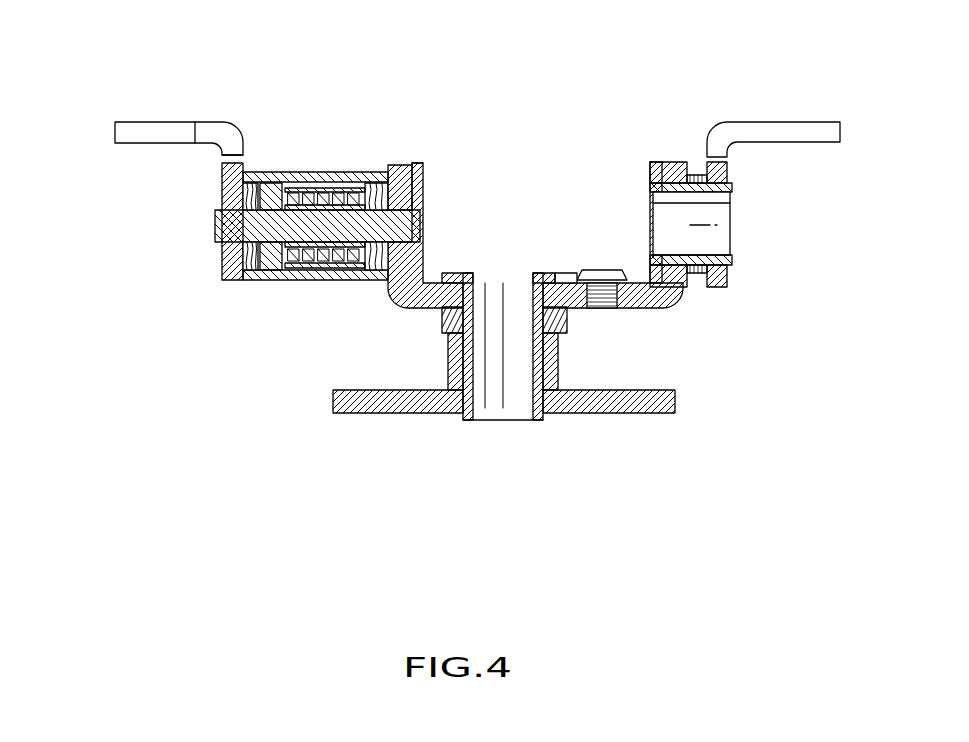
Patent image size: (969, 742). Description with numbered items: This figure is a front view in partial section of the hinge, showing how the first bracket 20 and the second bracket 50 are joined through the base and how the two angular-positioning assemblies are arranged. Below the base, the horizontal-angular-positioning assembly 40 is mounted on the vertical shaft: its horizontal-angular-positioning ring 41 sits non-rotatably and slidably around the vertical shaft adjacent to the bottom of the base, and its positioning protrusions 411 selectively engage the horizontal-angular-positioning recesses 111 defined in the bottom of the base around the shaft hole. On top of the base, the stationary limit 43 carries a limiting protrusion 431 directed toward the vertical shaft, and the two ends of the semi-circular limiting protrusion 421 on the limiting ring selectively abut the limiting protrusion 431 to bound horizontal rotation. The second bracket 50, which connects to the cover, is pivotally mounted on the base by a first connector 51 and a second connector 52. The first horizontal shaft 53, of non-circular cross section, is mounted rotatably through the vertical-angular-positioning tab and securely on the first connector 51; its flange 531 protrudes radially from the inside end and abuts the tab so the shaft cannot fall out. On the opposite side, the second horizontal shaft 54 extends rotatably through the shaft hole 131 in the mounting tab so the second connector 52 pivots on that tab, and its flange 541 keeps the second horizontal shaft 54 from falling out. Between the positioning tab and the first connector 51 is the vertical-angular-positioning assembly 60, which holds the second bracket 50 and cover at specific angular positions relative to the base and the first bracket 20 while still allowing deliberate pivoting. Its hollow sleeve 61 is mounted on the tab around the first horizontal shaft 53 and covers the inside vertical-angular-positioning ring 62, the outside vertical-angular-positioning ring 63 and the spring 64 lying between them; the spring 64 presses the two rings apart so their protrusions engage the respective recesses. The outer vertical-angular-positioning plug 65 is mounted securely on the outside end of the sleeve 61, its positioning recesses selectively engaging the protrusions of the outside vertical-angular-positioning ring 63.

The first bracket 20 is at (617, 413).
The horizontal-angular-positioning assembly 40 is at (538, 164).
The horizontal-angular-positioning ring 41 is at (473, 312).
The positioning protrusions 411 is at (442, 316).
The limiting protrusion 421 is at (445, 273).
The stationary limit 43 is at (628, 280).
The limiting protrusion 431 is at (571, 273).
The horizontal-angular-positioning recesses 111 is at (567, 326).
The shaft hole 131 is at (705, 184).
The second bracket 50 is at (446, 111).
The first connector 51 is at (158, 128).
The second connector 52 is at (795, 122).
The first horizontal shaft 53 is at (218, 240).
The flange 531 is at (421, 164).
The second horizontal shaft 54 is at (729, 186).
The flange 541 is at (658, 162).
The vertical-angular-positioning assembly 60 is at (295, 195).
The sleeve 61 is at (299, 172).
The inside vertical-angular-positioning ring 62 is at (377, 172).
The outside vertical-angular-positioning ring 63 is at (271, 172).
The spring 64 is at (311, 262).
The outer vertical-angular-positioning plug 65 is at (253, 172).